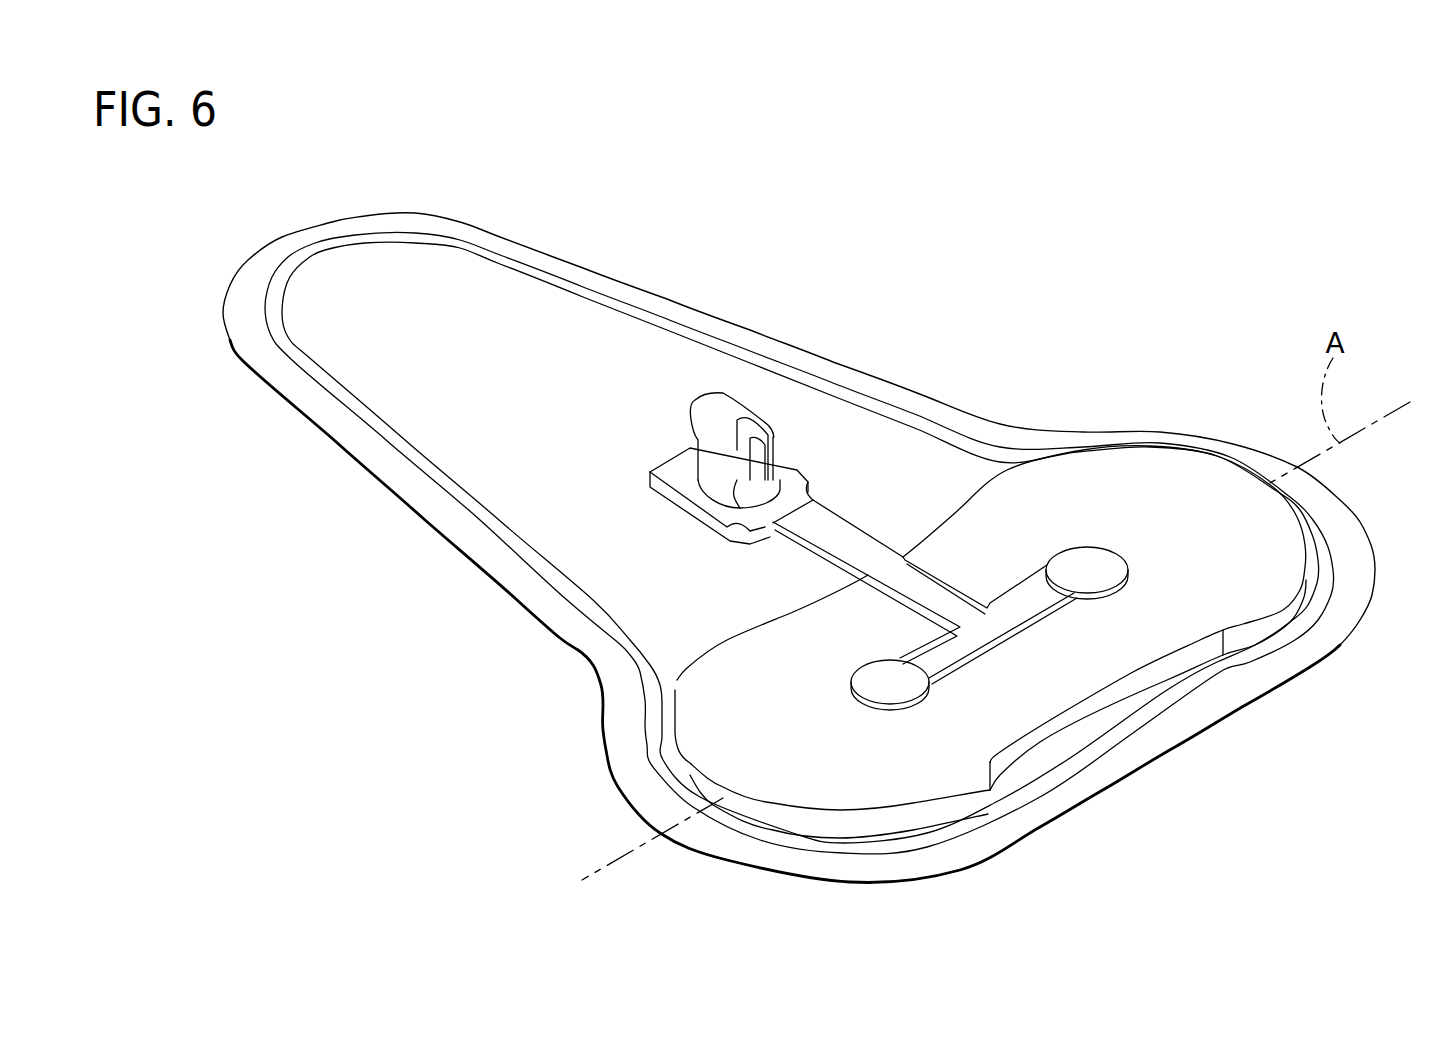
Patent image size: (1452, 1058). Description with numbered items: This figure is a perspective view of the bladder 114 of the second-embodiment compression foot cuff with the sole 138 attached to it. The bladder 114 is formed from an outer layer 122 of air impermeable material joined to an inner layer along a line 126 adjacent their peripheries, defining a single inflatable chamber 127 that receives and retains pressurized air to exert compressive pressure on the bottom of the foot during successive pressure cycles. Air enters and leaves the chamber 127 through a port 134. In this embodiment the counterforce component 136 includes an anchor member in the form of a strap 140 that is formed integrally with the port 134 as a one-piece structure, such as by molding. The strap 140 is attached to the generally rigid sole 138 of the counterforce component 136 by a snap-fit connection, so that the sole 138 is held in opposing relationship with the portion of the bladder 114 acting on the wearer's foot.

The bladder 114 is at (779, 248).
The outer layer 122 is at (410, 487).
The line 126 is at (592, 300).
The inflatable chamber 127 is at (430, 297).
The port 134 is at (725, 410).
The counterforce component 136 is at (990, 563).
The sole 138 is at (1203, 500).
The strap 140 is at (850, 527).